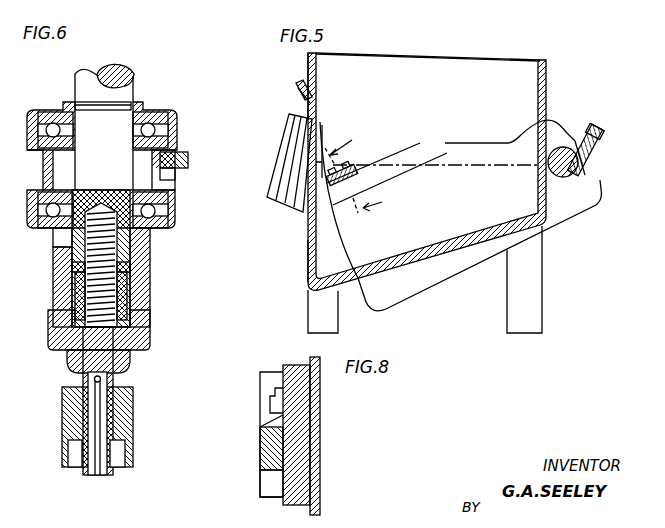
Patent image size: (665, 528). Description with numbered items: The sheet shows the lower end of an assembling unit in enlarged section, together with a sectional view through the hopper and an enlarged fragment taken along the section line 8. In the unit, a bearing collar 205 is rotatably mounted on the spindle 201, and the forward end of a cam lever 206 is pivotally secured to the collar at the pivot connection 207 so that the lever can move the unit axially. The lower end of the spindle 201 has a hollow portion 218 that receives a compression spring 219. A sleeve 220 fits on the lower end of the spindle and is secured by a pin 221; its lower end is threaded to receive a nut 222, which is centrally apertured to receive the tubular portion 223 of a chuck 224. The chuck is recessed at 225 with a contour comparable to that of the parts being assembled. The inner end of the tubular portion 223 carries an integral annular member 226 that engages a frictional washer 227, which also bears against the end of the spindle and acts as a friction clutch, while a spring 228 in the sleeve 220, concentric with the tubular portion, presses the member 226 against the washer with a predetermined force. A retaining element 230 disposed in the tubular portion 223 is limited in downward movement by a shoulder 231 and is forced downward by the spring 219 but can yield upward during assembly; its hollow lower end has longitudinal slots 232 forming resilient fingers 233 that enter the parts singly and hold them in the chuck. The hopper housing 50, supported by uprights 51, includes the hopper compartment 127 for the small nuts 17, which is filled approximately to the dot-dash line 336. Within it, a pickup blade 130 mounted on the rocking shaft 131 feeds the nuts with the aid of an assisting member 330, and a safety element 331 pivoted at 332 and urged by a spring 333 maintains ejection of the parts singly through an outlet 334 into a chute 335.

In FIG. 6, the spindle 201 is at (138, 76).
In FIG. 6, the bearing collar 205 is at (45, 172).
In FIG. 6, the cam lever 206 is at (181, 153).
In FIG. 6, the pivot connection 207 is at (182, 180).
In FIG. 6, the hollow portion 218 is at (113, 243).
In FIG. 6, the compression spring 219 is at (132, 262).
In FIG. 6, the sleeve 220 is at (68, 267).
In FIG. 6, the pin 221 is at (55, 242).
In FIG. 6, the nut 222 is at (148, 338).
In FIG. 6, the tubular portion 223 is at (118, 377).
In FIG. 6, the chuck 224 is at (134, 418).
In FIG. 6, the recess 225 is at (78, 467).
In FIG. 6, the annular member 226 is at (133, 278).
In FIG. 6, the frictional washer 227 is at (72, 268).
In FIG. 6, the spring 228 is at (127, 298).
In FIG. 6, the retaining element 230 is at (97, 372).
In FIG. 6, the shoulder 231 is at (67, 354).
In FIG. 6, the longitudinal slots 232 is at (100, 477).
In FIG. 6, the resilient fingers 233 is at (114, 468).
In FIG. 5, the hopper housing 50 is at (547, 95).
In FIG. 8, the hopper housing 50 is at (318, 446).
In FIG. 5, the uprights 51 is at (309, 306).
In FIG. 5, the hopper compartment 127 is at (507, 73).
In FIG. 5, the pickup blade 130 is at (498, 150).
In FIG. 8, the pickup blade 130 is at (265, 457).
In FIG. 5, the rocking shaft 131 is at (593, 162).
In FIG. 5, the dot-dash line 336 is at (461, 167).
In FIG. 5, the small nut 17 is at (350, 164).
In FIG. 8, the small nut 17 is at (278, 388).
In FIG. 5, the section line 8— 8 is at (354, 178).
In FIG. 5, the chute 335 is at (284, 145).
In FIG. 5, the spring 333 is at (307, 84).
In FIG. 5, the pivot 332 is at (300, 95).
In FIG. 5, the safety element 331 is at (318, 106).
In FIG. 5, the outlet 334 is at (322, 121).
In FIG. 5, the assisting member 330 is at (322, 254).
In FIG. 8, the assisting member 330 is at (267, 485).